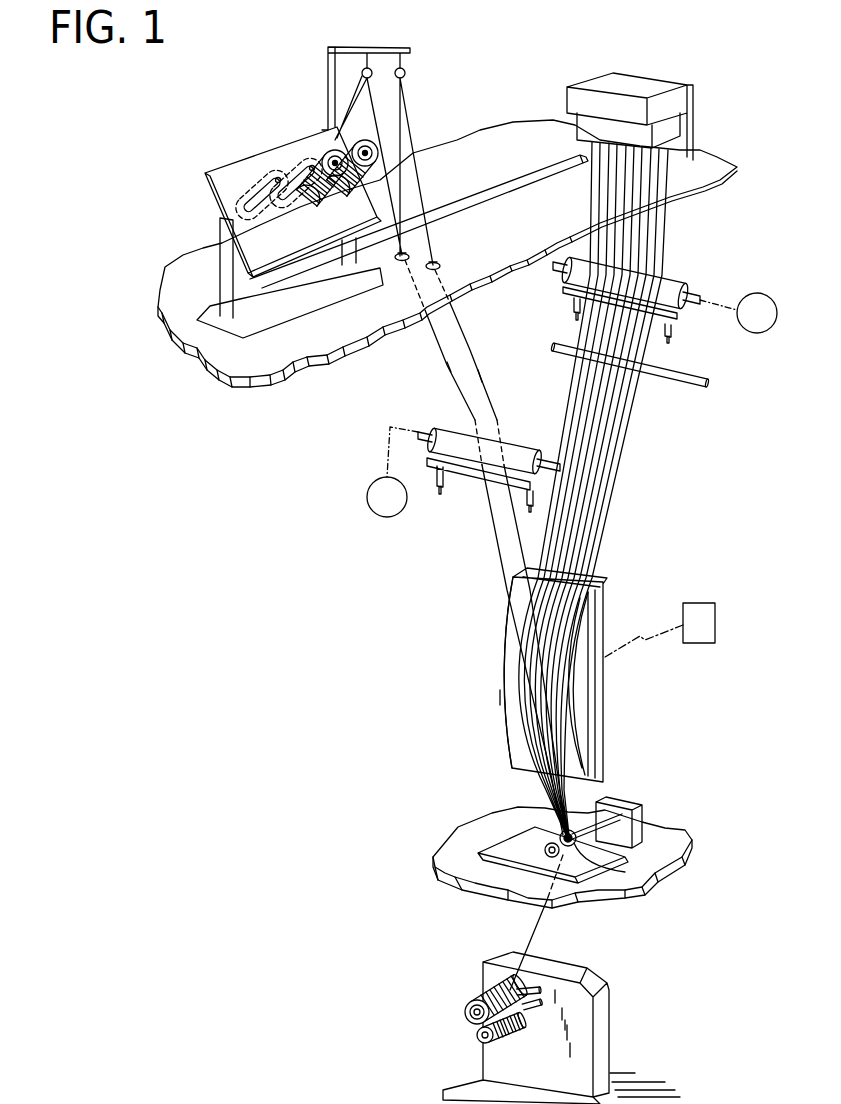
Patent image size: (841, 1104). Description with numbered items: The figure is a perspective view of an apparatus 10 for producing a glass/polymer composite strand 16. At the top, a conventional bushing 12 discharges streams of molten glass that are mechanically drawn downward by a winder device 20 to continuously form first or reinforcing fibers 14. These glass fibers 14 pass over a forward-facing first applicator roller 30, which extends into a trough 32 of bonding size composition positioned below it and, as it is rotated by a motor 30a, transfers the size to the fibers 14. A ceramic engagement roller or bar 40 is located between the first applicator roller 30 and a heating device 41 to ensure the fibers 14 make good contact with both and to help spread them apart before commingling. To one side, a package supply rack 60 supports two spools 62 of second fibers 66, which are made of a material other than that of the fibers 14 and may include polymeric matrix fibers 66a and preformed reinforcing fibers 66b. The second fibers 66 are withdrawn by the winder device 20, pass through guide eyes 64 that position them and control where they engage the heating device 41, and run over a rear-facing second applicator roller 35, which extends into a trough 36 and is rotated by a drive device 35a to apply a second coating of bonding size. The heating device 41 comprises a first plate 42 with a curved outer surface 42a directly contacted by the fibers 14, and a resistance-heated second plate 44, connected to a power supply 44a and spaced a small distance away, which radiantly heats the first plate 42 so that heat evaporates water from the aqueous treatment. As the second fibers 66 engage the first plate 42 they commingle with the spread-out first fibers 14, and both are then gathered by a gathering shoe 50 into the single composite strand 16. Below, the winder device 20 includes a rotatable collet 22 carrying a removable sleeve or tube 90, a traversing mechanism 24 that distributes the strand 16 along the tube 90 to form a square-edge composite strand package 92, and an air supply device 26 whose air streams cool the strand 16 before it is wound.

The apparatus 10 is at (668, 88).
The bushing 12 is at (668, 128).
The first or reinforcing fibers 14 is at (623, 413).
The glass/polymer composite strand 16 is at (530, 927).
The winder device 20 is at (531, 1011).
The collet 22 is at (465, 1010).
The traversing mechanism 24 is at (478, 1041).
The air supply device 26 is at (540, 1006).
The first applicator roller 30 is at (651, 292).
The motor 30a is at (757, 293).
The trough 32 is at (683, 313).
The second applicator roller 35 is at (472, 470).
The drive device 35a is at (368, 492).
The trough 36 is at (467, 470).
The engagement roller or bar 40 is at (556, 350).
The heating device 41 is at (562, 659).
The first plate 42 is at (505, 636).
The curved outer surface 42a is at (498, 698).
The second plate 44 is at (607, 574).
The power supply 44a is at (700, 645).
The gathering shoe 50 is at (665, 870).
The package supply rack 60 is at (232, 175).
The spools 62 is at (356, 145).
The guide eyes 64 is at (402, 73).
The second fibers 66 is at (458, 325).
The polymeric matrix fibers 66a is at (447, 365).
The reinforcing fibers 66b is at (481, 372).
The sleeve or tube 90 is at (476, 1028).
The composite strand package 92 is at (478, 998).